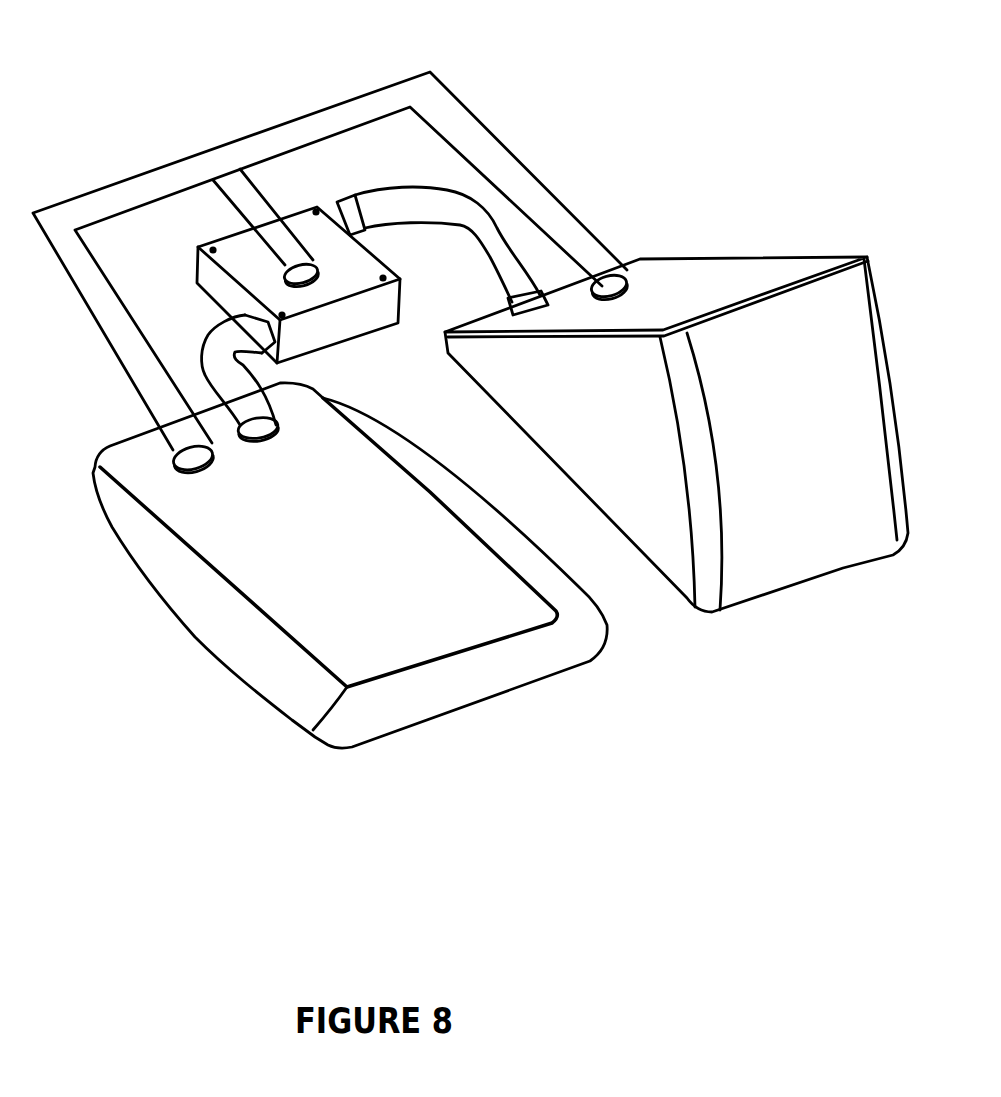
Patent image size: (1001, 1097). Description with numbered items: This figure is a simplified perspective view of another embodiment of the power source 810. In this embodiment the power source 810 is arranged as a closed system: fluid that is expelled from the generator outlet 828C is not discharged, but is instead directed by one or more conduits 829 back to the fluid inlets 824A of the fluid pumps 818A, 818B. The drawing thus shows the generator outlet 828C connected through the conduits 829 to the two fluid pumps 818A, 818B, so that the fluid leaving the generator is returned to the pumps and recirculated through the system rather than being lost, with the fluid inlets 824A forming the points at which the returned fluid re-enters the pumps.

The power source 810 is at (650, 158).
The conduit 829 is at (318, 115).
The fluid inlet 824A is at (614, 283).
The generator outlet 828C is at (317, 283).
The fluid pump 818A is at (477, 688).
The fluid pump 818B is at (770, 562).